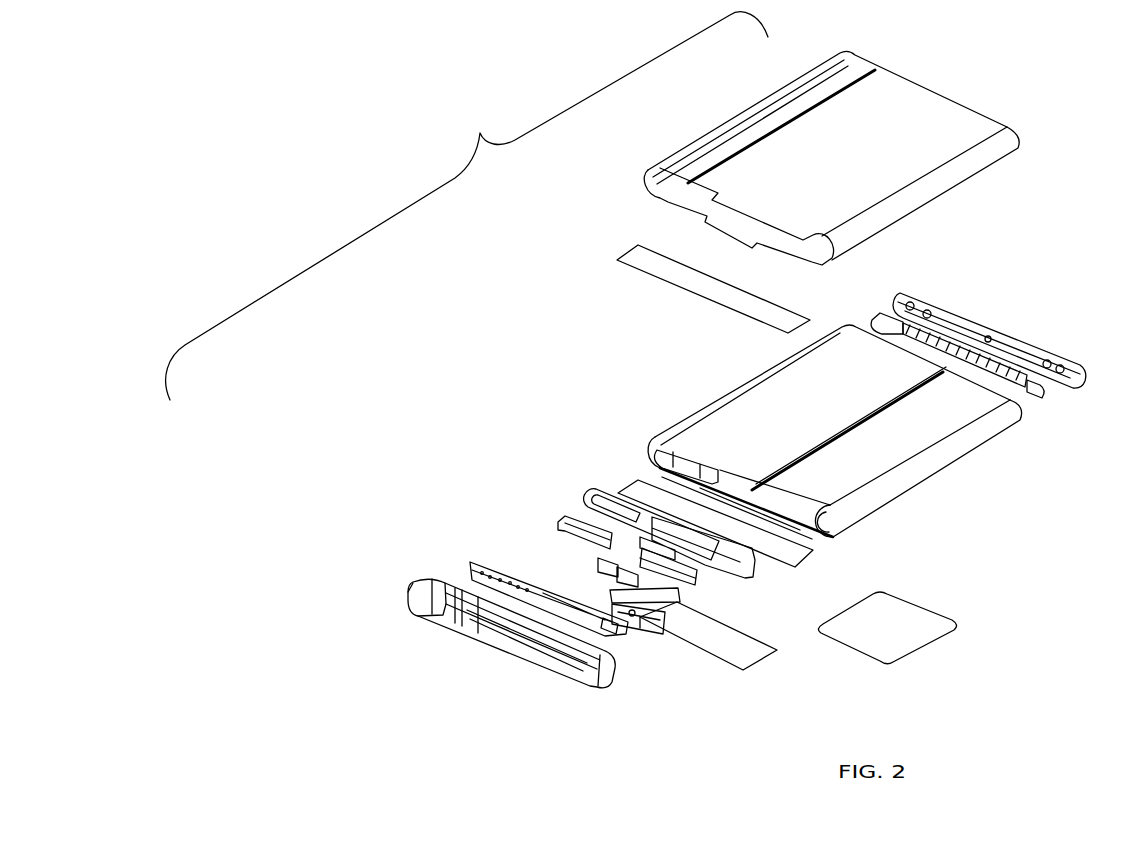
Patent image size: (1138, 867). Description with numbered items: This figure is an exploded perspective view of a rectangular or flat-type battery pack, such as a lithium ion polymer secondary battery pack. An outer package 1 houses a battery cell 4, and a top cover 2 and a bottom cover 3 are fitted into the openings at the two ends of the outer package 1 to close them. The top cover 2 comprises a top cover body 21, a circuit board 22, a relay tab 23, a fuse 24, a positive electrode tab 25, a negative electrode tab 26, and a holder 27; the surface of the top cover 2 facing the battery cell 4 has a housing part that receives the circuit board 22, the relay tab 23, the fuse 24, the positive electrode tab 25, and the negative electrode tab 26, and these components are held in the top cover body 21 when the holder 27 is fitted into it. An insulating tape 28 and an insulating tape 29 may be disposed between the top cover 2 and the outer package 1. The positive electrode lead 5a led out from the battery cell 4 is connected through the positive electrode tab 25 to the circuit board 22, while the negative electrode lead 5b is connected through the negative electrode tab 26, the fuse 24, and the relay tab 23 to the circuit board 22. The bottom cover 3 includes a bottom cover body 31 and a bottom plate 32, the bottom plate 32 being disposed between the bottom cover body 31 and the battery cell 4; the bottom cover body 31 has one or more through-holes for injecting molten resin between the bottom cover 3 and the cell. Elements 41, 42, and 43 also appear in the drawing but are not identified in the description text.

The outer package 1 is at (767, 397).
The top cover 2 is at (580, 392).
The bottom cover 3 is at (1130, 467).
The battery cell 4 is at (717, 402).
The positive electrode lead 5a is at (673, 453).
The negative electrode lead 5b is at (840, 505).
The top cover body 21 is at (397, 580).
The circuit board 22 is at (465, 567).
The relay tab 23 is at (667, 634).
The fuse 24 is at (680, 595).
The positive electrode tab 25 is at (563, 520).
The negative electrode tab 26 is at (698, 582).
The holder 27 is at (583, 493).
The insulating tape 28 is at (813, 553).
The insulating tape 29 is at (757, 663).
The bottom cover body 31 is at (1078, 383).
The bottom plate 32 is at (1042, 402).
The upper plate 41 is at (687, 143).
The spacer plate 42 is at (623, 253).
The pad 43 is at (928, 642).